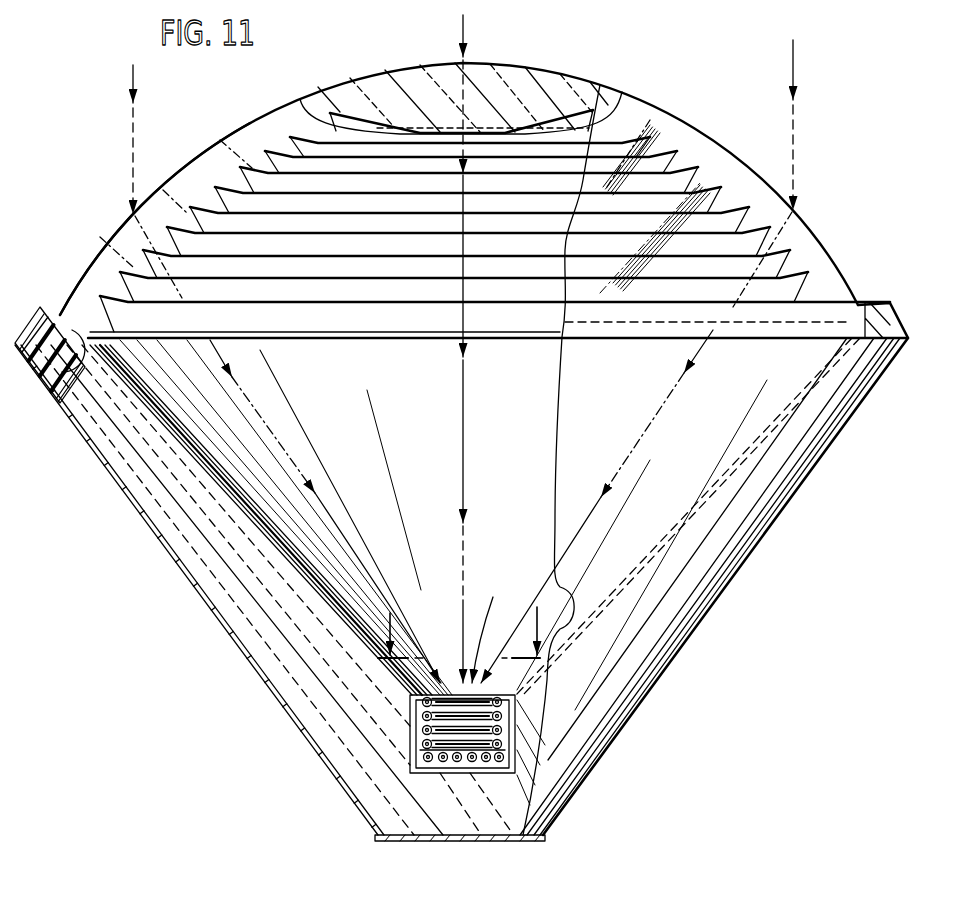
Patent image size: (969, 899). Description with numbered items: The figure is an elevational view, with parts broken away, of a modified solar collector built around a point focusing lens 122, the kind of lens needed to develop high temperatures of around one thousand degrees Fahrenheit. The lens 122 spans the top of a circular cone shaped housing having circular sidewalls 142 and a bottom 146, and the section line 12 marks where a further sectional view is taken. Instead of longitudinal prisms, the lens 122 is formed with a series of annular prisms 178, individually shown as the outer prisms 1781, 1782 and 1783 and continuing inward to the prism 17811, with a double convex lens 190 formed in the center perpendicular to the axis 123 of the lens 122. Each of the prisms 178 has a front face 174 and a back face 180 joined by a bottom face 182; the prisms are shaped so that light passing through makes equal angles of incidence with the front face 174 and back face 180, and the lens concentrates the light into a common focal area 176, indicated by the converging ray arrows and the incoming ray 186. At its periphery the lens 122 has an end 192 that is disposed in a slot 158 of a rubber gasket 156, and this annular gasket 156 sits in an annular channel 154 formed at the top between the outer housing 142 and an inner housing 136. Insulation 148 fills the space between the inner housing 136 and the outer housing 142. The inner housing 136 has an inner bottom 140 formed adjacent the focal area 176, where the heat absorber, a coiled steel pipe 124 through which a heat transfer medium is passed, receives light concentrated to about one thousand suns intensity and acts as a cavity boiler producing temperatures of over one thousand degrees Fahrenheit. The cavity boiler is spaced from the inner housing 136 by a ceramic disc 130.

The section line 12 is at (466, 630).
The point focusing lens 122 is at (683, 117).
The axis 123 is at (458, 412).
The coiled steel pipe 124 is at (503, 727).
The ceramic disc 130 is at (473, 768).
The inner housing 136 is at (223, 483).
The inner bottom 140 is at (420, 750).
The circular sidewalls (outer housing) 142 is at (150, 530).
The bottom 146 is at (400, 840).
The insulation 148 is at (207, 577).
The annular channel 154 is at (80, 392).
The rubber gasket 156 is at (63, 350).
The slot 158 is at (62, 305).
The front face 174 is at (212, 140).
The focal area 176 is at (389, 516).
The annular prisms 178 is at (469, 184).
The first annular prism 1781 is at (108, 308).
The second annular prism 1782 is at (125, 278).
The third annular prism 1783 is at (143, 252).
The eleventh annular prism 17811 is at (330, 113).
The back face 180 is at (207, 230).
The bottom face 182 is at (205, 198).
The incident light ray 186 is at (128, 68).
The double convex lens 190 is at (540, 86).
The end 192 is at (72, 368).